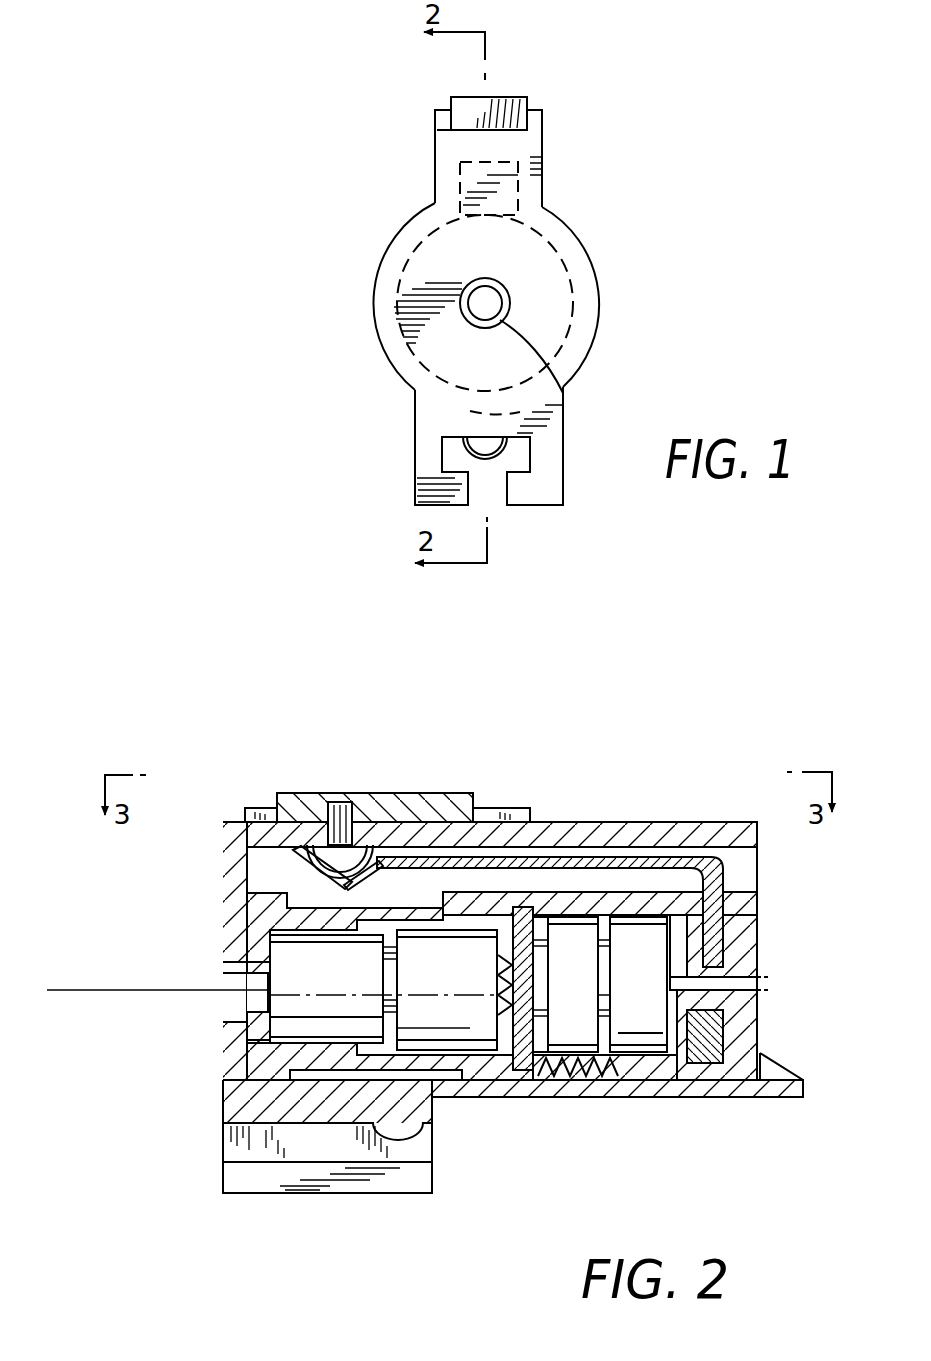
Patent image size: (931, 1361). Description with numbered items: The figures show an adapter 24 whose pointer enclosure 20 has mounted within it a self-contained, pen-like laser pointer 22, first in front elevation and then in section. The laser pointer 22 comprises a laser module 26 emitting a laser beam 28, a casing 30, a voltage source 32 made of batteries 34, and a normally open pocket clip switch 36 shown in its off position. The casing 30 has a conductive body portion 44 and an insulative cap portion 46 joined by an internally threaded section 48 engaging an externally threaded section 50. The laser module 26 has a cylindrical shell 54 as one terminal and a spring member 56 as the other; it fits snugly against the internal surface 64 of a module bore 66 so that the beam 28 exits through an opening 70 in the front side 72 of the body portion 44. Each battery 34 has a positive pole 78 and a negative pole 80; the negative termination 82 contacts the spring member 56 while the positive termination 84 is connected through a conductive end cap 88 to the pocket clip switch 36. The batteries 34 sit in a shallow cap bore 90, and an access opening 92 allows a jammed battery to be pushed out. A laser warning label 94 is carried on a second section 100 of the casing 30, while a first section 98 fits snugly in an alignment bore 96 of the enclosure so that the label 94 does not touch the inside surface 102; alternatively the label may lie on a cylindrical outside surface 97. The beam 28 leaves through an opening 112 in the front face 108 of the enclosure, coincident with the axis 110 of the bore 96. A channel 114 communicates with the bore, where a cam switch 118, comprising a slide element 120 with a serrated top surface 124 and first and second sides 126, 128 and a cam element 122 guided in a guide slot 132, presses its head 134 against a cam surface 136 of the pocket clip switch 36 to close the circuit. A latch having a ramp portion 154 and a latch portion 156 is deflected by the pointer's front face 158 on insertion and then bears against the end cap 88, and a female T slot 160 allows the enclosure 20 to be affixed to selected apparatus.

In FIG. 1, the pointer enclosure 20 is at (567, 231).
In FIG. 2, the pointer enclosure 20 is at (602, 820).
In FIG. 1, the laser pointer 22 is at (408, 240).
In FIG. 1, the adapter 24 is at (383, 360).
In FIG. 2, the adapter 24 is at (418, 1209).
In FIG. 2, the laser module 26 is at (500, 1092).
In FIG. 2, the laser beam 28 is at (352, 976).
In FIG. 2, the casing 30 is at (253, 923).
In FIG. 2, the voltage source 32 is at (638, 984).
In FIG. 2, the battery 34 is at (571, 984).
In FIG. 2, the pocket clip switch 36 is at (645, 857).
In FIG. 2, the body portion 44 is at (257, 903).
In FIG. 2, the cap portion 46 is at (683, 890).
In FIG. 2, the internally threaded section 48 is at (607, 1093).
In FIG. 2, the externally threaded section 50 is at (667, 1096).
In FIG. 2, the cylindrical shell 54 is at (200, 940).
In FIG. 2, the spring member 56 is at (480, 953).
In FIG. 2, the internal surface 64 is at (326, 1018).
In FIG. 2, the module bore 66 is at (283, 937).
In FIG. 1, the opening 70 is at (565, 396).
In FIG. 2, the front side 72 is at (223, 1036).
In FIG. 2, the positive pole 78 is at (638, 1025).
In FIG. 2, the negative pole 80 is at (573, 1025).
In FIG. 2, the negative termination 82 is at (557, 1085).
In FIG. 2, the positive termination 84 is at (757, 928).
In FIG. 2, the end cap 88 is at (757, 905).
In FIG. 2, the cap bore 90 is at (763, 1095).
In FIG. 2, the access opening 92 is at (757, 957).
In FIG. 2, the laser warning label 94 is at (443, 1098).
In FIG. 2, the alignment bore 96 is at (283, 1087).
In FIG. 1, the outside surface 97 is at (364, 297).
In FIG. 2, the first section 98 is at (233, 1118).
In FIG. 2, the second section 100 is at (445, 913).
In FIG. 2, the inside surface 102 is at (337, 1082).
In FIG. 1, the front face 108 is at (443, 427).
In FIG. 2, the axis 110 is at (162, 989).
In FIG. 1, the opening 112 is at (512, 299).
In FIG. 2, the channel 114 is at (742, 867).
In FIG. 1, the cam switch 118 is at (518, 97).
In FIG. 1, the slide element 120 is at (512, 118).
In FIG. 2, the cam element 122 is at (365, 867).
In FIG. 1, the serrated top surface 124 is at (466, 97).
In FIG. 1, the first side 126 is at (451, 103).
In FIG. 1, the second side 128 is at (531, 103).
In FIG. 2, the guide slot 132 is at (298, 830).
In FIG. 2, the head 134 is at (337, 800).
In FIG. 2, the cam surface 136 is at (296, 855).
In FIG. 2, the ramp portion 154 is at (783, 1073).
In FIG. 2, the latch portion 156 is at (763, 994).
In FIG. 2, the front face 158 is at (228, 1068).
In FIG. 1, the female T slot 160 is at (538, 460).